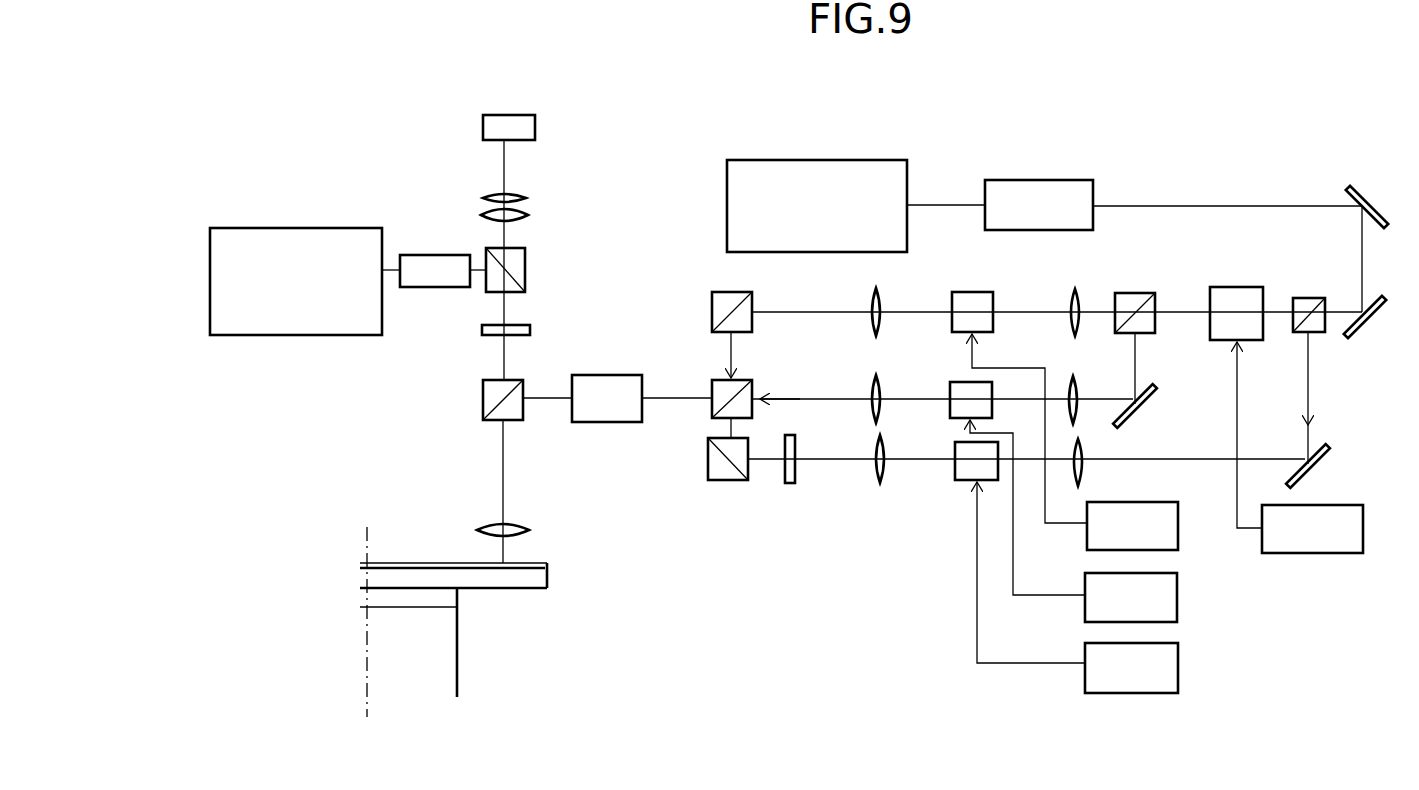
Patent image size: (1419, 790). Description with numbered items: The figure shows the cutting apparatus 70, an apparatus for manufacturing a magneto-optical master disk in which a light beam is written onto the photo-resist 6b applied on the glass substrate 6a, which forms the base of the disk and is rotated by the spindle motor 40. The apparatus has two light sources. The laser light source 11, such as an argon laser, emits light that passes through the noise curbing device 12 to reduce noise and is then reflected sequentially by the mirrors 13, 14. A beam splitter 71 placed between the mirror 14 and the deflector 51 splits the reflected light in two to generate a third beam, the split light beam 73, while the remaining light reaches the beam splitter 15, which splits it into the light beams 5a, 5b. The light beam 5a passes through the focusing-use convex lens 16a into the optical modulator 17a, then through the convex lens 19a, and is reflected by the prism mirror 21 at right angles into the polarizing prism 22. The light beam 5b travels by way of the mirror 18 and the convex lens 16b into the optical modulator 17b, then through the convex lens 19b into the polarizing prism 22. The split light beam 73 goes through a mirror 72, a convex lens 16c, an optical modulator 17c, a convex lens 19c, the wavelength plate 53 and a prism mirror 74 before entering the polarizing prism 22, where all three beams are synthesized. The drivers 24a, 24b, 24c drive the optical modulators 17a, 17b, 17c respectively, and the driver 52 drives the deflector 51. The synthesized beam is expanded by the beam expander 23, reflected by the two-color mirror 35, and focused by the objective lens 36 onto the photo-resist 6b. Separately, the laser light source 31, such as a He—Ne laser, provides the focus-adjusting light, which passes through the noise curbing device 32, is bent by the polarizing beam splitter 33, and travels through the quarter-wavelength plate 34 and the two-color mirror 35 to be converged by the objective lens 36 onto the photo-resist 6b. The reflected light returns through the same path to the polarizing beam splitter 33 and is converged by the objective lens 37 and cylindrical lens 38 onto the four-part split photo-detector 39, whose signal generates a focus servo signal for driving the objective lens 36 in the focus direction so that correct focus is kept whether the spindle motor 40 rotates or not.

The light beam 5a is at (728, 362).
The light beam 5b is at (778, 400).
The glass substrate 6a is at (550, 590).
The photo-resist 6b is at (549, 566).
The laser light source 11 is at (805, 160).
The noise curbing device 12 is at (1022, 180).
The mirror 13 is at (1374, 195).
The mirror 14 is at (1376, 332).
The beam splitter 15 is at (1130, 293).
The convex lens 16a is at (1095, 275).
The convex lens 16b is at (1092, 366).
The convex lens 16c is at (1088, 458).
The optical modulator 17a is at (962, 292).
The optical modulator 17b is at (950, 410).
The optical modulator 17c is at (962, 482).
The mirror 18 is at (1157, 396).
The convex lens 19a is at (882, 300).
The convex lens 19b is at (882, 382).
The convex lens 19c is at (877, 484).
The prism mirror 21 is at (722, 292).
The polarizing prism 22 is at (742, 382).
The beam expander 23 is at (617, 375).
The driver 24a is at (1120, 502).
The driver 24b is at (1178, 597).
The driver 24c is at (1178, 665).
The laser light source 31 is at (310, 228).
The noise curbing device 32 is at (415, 255).
The polarizing beam splitter 33 is at (527, 270).
The ¼-wavelength plate 34 is at (520, 325).
The 2-color mirror 35 is at (483, 400).
The objective lens 36 is at (531, 530).
The objective lens 37 is at (531, 218).
The cylindrical lens 38 is at (530, 198).
The 4-part split photo-detector 39 is at (537, 128).
The spindle motor 40 is at (458, 650).
The deflector 51 is at (1237, 287).
The driver 52 is at (1322, 555).
The wavelength plate 53 is at (790, 485).
The cutting apparatus 70 is at (1209, 160).
The beam splitter 71 is at (1308, 298).
The mirror 72 is at (1332, 456).
The split light beam 73 is at (1310, 390).
The prism mirror 74 is at (712, 482).